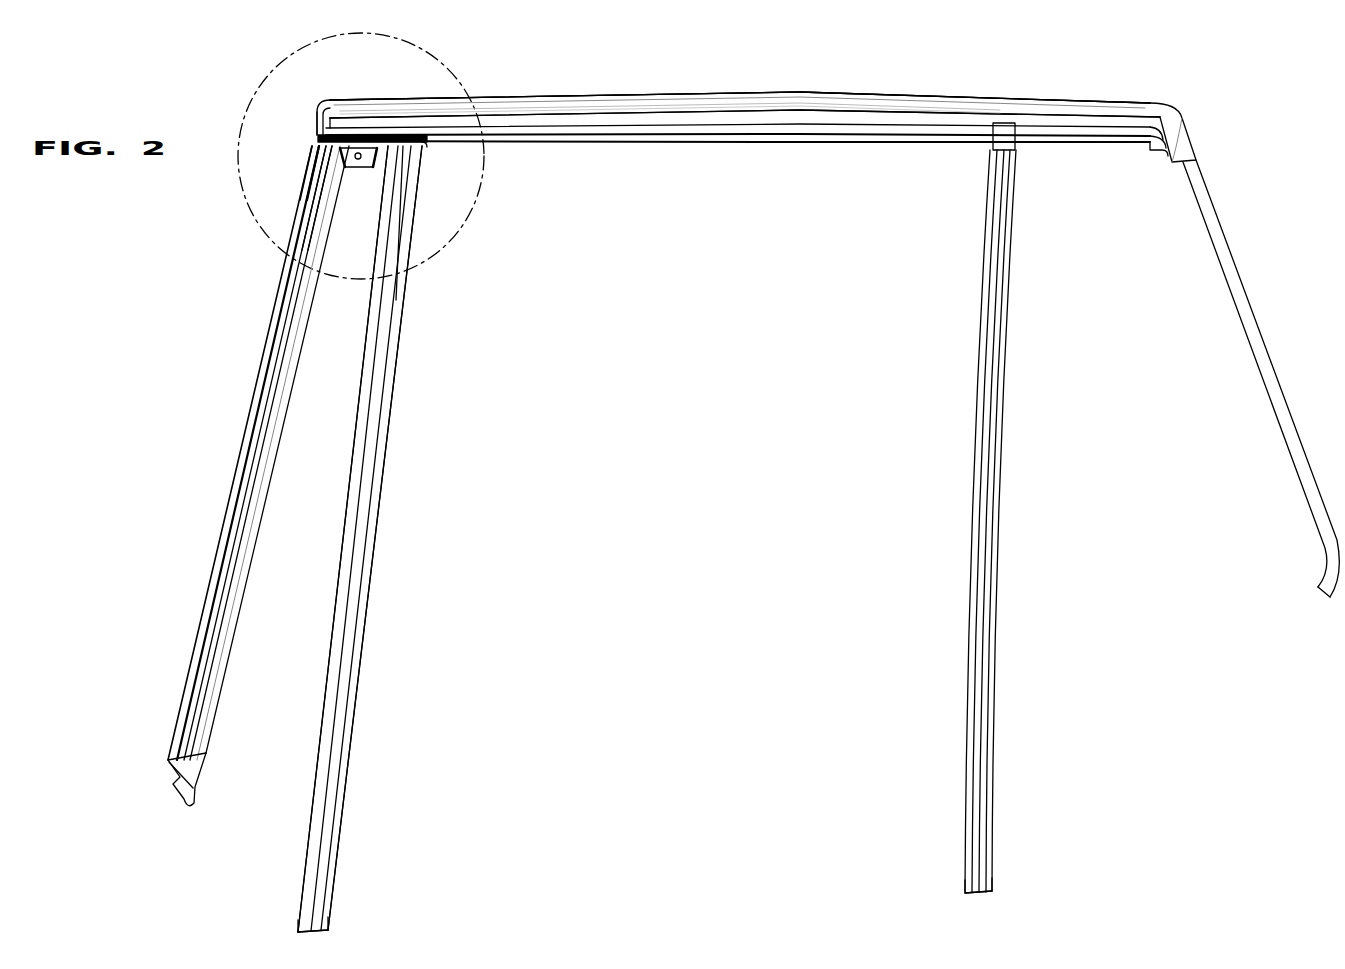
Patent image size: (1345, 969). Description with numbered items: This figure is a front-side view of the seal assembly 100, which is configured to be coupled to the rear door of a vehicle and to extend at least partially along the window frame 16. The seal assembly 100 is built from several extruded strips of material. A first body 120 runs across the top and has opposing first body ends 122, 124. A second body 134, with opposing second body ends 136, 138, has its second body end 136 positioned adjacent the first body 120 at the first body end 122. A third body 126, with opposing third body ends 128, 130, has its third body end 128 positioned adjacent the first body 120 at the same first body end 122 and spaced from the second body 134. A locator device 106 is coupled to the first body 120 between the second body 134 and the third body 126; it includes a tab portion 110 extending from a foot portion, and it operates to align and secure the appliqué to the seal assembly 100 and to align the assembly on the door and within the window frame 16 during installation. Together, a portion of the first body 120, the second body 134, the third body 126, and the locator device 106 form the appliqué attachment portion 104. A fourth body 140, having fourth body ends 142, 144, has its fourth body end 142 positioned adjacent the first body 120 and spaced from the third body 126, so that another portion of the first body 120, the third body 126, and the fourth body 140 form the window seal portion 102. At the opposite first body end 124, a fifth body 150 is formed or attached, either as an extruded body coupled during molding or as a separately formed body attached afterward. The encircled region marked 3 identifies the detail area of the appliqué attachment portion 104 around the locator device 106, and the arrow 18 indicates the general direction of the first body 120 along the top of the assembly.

The detail view boundary 3 is at (478, 60).
The window frame 16 is at (352, 693).
The top frame member 18 is at (755, 200).
The seal assembly 100 is at (1117, 90).
The window seal portion 102 is at (879, 104).
The appliqué attachment portion 104 is at (312, 134).
The locator device 106 is at (349, 180).
The tab portion 110 is at (362, 168).
The first body 120 is at (683, 120).
The first body end 122 is at (356, 125).
The first body end 124 is at (1145, 128).
The third body 126 is at (247, 468).
The third body end 128 is at (310, 157).
The third body end 130 is at (178, 732).
The second body 134 is at (393, 478).
The second body end 136 is at (422, 165).
The second body end 138 is at (322, 891).
The fourth body 140 is at (965, 500).
The fourth body end 142 is at (993, 148).
The fourth body end 144 is at (965, 886).
The fifth body 150 is at (1227, 281).